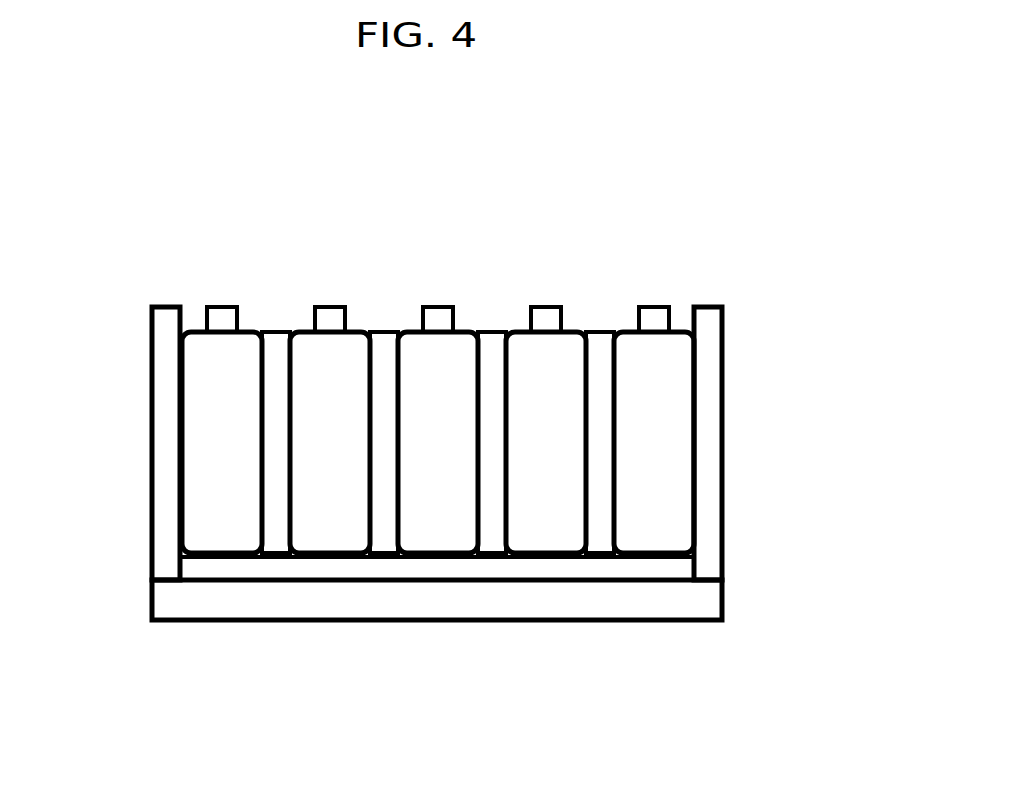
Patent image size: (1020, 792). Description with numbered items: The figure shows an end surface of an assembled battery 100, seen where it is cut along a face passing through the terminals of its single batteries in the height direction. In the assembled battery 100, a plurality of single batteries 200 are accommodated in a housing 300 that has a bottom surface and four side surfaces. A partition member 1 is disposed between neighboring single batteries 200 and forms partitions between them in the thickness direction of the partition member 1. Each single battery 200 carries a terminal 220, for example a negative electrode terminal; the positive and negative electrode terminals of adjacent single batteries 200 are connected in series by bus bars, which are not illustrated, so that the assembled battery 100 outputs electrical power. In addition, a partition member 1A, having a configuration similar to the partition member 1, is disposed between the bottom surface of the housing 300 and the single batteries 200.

The assembled battery 100 is at (812, 252).
The single battery 200 is at (220, 560).
The terminal 220 is at (218, 307).
The partition member 1 is at (272, 548).
The partition member 1A is at (686, 567).
The housing 300 is at (150, 471).